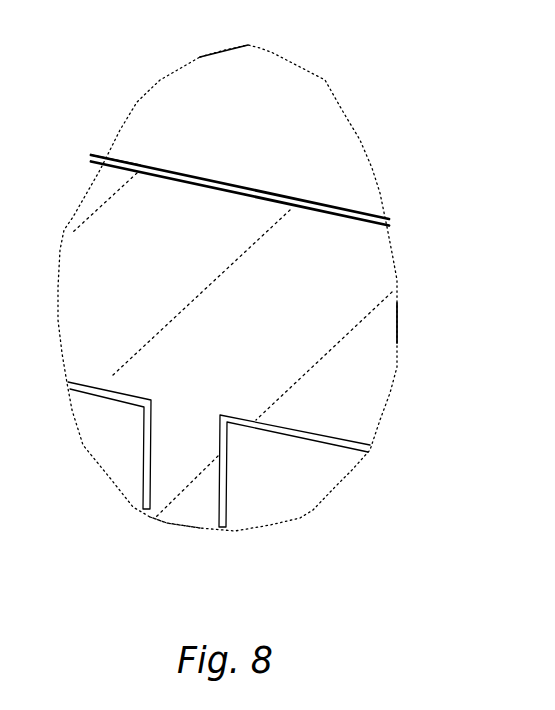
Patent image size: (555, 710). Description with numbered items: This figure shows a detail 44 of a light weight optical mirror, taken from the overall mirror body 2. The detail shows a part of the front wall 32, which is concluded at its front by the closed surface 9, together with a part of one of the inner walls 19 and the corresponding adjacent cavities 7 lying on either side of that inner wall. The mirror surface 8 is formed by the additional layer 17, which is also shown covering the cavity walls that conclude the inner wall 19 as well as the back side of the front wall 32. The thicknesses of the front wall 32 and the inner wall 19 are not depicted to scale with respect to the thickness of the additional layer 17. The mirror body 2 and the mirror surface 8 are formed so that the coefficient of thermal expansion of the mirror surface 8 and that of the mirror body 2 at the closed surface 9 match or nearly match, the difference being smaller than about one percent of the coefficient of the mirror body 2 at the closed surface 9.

The mirror surface 8 is at (203, 127).
The detail 44 is at (345, 116).
The additional layer 17 is at (246, 186).
The mirror body 2 is at (362, 245).
The closed surface 9 is at (128, 165).
The front wall 32 is at (176, 286).
The cavities 7 is at (113, 463).
The inner wall 19 is at (194, 503).